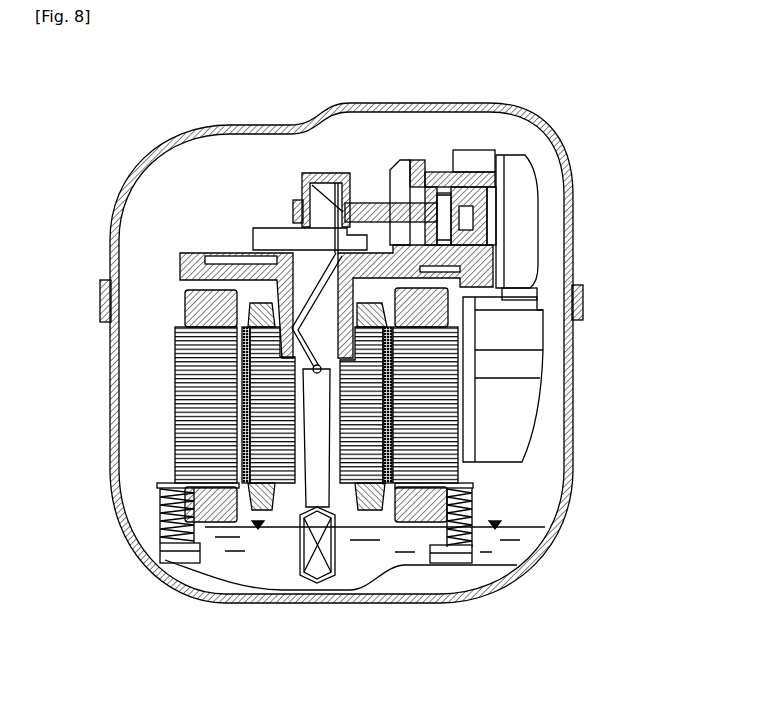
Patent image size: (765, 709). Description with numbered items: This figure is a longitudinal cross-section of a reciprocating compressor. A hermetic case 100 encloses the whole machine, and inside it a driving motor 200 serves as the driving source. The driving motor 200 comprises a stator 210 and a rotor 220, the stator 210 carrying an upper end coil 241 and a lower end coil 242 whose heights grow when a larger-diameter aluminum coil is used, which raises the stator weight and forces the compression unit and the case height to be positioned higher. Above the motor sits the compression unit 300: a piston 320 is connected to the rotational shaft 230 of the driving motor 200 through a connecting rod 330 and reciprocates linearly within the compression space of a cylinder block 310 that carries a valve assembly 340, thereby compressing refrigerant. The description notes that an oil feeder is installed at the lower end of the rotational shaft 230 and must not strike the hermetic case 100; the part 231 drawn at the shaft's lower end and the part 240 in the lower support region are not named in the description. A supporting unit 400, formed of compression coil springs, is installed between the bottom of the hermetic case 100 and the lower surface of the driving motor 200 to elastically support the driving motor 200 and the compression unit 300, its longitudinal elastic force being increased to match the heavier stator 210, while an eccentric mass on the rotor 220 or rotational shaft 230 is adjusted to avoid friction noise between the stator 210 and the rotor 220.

The hermetic case 100 is at (160, 156).
The driving motor 200 is at (256, 405).
The stator 210 is at (185, 377).
The rotor 220 is at (253, 443).
The rotational shaft 230 is at (310, 278).
The crankshaft 231 is at (333, 580).
The support unit 240 is at (339, 566).
The upper end coil 241 is at (190, 310).
The lower end coil 242 is at (162, 530).
The compression unit 300 is at (490, 258).
The cylinder block 310 is at (483, 267).
The piston 320 is at (487, 235).
The connecting rod 330 is at (415, 203).
The valve assembly 340 is at (497, 190).
The supporting unit 400 is at (160, 510).